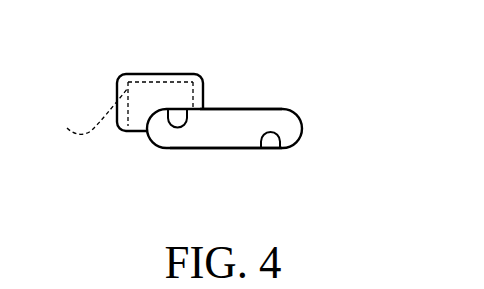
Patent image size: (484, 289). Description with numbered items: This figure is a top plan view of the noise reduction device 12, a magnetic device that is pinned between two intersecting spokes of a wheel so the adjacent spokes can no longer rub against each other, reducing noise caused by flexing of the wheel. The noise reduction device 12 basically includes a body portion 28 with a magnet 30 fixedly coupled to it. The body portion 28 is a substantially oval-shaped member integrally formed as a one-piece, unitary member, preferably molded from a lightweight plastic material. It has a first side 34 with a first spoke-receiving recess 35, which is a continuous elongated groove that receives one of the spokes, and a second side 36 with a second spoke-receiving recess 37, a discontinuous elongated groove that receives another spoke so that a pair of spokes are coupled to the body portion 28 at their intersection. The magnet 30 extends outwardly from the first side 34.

The noise reduction device 12 is at (342, 92).
The body portion 28 is at (316, 121).
The magnet 30 is at (84, 114).
The first side 34 is at (263, 108).
The first spoke-receiving recess 35 is at (181, 102).
The second side 36 is at (210, 149).
The second spoke-receiving recess 37 is at (268, 158).